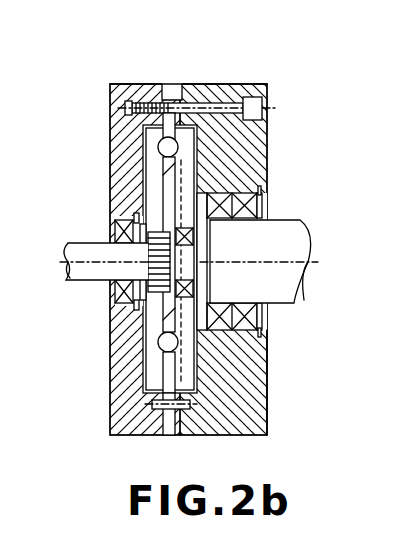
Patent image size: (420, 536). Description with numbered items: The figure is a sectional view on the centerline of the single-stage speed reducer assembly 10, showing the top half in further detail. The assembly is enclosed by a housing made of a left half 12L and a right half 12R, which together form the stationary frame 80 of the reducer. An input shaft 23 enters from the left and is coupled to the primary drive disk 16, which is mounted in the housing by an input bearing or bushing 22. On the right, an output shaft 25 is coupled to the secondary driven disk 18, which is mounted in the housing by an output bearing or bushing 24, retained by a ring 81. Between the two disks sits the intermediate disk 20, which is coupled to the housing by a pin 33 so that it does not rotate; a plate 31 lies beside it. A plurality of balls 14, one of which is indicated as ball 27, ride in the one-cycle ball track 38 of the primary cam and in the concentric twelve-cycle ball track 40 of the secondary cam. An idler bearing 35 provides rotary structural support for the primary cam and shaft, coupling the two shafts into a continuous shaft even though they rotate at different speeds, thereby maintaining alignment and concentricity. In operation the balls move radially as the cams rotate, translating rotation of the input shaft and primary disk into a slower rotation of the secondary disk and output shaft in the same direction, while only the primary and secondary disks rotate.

The speed reducer assembly 10 is at (185, 72).
The housing (left half) 12L is at (112, 140).
The housing (right half) 12R is at (265, 424).
The balls 14 is at (157, 348).
The primary disk 16 is at (157, 378).
The secondary disk 18 is at (255, 372).
The intermediate disk 20 is at (165, 100).
The input bearing or bushing 22 is at (114, 222).
The input shaft 23 is at (96, 283).
The output bearing or bushing 24 is at (263, 196).
The output shaft 25 is at (302, 300).
The ball 27 is at (158, 147).
The plate 31 is at (146, 298).
The pin 33 is at (160, 406).
The idler bearing 35 is at (196, 266).
The ball track 38 is at (126, 107).
The ball track 40 is at (188, 124).
The housing 80 is at (264, 82).
The retaining ring 81 is at (263, 332).